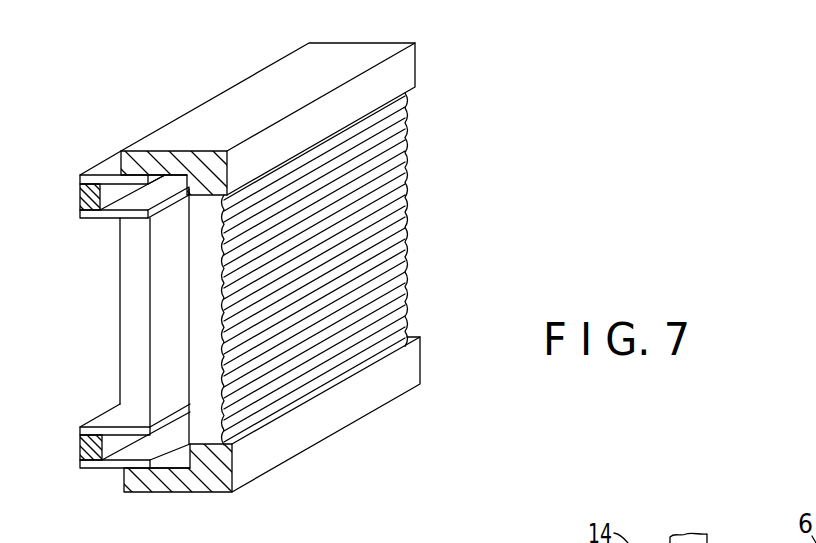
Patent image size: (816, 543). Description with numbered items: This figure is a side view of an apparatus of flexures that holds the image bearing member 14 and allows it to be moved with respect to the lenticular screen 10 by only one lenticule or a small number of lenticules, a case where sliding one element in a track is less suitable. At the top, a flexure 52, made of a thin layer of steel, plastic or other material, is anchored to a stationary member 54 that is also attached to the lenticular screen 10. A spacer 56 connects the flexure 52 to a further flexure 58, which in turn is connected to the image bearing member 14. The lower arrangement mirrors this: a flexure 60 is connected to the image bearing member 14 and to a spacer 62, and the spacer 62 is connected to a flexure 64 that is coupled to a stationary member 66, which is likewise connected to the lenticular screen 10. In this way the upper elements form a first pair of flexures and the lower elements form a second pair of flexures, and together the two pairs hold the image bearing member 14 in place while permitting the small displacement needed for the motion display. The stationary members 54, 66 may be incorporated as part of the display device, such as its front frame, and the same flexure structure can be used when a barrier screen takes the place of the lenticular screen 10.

The lenticular screen 10 is at (408, 195).
The image bearing member 14 is at (130, 335).
The flexure 52 is at (100, 163).
The stationary member 54 is at (415, 63).
The spacer 56 is at (80, 200).
The further flexure 58 is at (98, 217).
The flexure 60 is at (97, 420).
The spacer 62 is at (83, 448).
The flexure 64 is at (107, 465).
The stationary member 66 is at (263, 453).